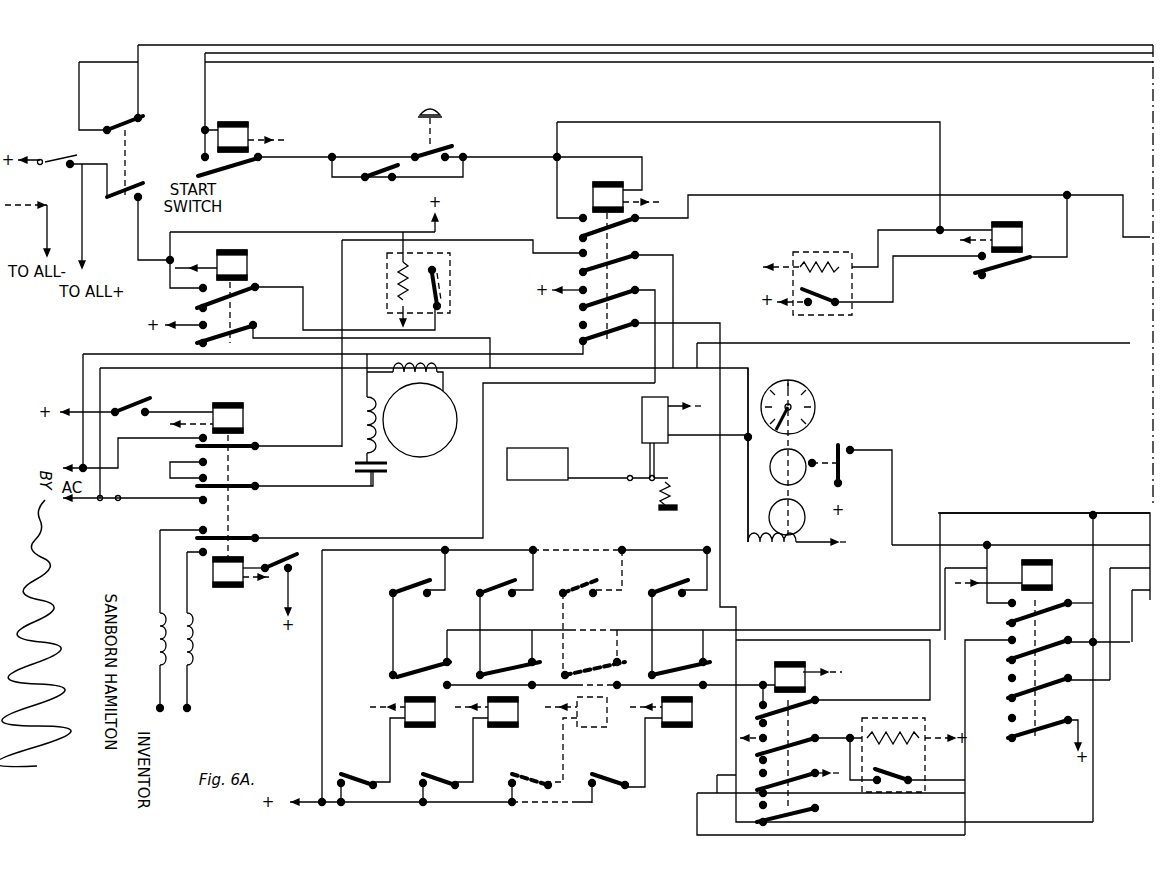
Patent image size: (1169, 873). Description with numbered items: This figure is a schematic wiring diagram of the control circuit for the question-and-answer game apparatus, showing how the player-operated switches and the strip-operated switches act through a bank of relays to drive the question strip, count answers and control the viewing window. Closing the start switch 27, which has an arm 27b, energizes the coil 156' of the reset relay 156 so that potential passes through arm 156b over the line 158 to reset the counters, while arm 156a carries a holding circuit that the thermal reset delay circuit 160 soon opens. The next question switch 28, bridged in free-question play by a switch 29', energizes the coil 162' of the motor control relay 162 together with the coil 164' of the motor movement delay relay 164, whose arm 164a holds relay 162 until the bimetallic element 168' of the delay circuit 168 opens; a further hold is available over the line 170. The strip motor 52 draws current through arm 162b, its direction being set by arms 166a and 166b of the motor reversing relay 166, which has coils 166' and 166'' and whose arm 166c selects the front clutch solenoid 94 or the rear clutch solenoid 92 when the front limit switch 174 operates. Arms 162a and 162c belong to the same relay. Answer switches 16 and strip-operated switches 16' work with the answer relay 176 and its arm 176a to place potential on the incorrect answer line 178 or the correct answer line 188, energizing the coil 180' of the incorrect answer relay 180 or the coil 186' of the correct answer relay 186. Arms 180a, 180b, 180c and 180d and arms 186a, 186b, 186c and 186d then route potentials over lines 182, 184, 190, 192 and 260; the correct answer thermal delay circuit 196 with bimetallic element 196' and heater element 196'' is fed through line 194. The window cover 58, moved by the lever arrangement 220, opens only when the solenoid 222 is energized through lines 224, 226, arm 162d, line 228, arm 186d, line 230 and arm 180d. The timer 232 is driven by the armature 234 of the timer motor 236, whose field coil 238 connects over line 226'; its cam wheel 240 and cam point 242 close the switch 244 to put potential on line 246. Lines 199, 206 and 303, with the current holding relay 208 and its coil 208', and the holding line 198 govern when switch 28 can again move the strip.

The start switch 27 is at (118, 124).
The start switch arm 27b is at (122, 193).
The next question switch 28 is at (452, 78).
The free question switch 29' is at (373, 190).
The supply line 303 is at (138, 98).
The positive potential line 206 is at (205, 98).
The holding circuit line 199 is at (1100, 62).
The current holding relay 208 is at (242, 173).
The current holding relay coil 208' is at (258, 123).
The reset relay 156 is at (173, 314).
The reset relay coil 156' is at (237, 265).
The reset relay arm 156a is at (235, 295).
The reset relay arm 156b is at (215, 348).
The reset line 158 is at (270, 340).
The thermal reset delay circuit 160 is at (450, 268).
The motor control relay 162 is at (550, 273).
The motor control relay coil 162' is at (622, 186).
The motor control relay arm 162a is at (625, 225).
The motor control relay arm 162b is at (620, 265).
The motor control relay arm 162c is at (615, 300).
The motor control relay arm 162d is at (580, 329).
The window cover circuit line 228 is at (700, 331).
The motor delay opening delay circuit 168 is at (853, 263).
The bimetallic element 168' is at (892, 296).
The motor movement delay relay 164 is at (928, 278).
The motor movement delay relay coil 164' is at (991, 226).
The motor delay relay arm 164a is at (1010, 270).
The holding line 170 is at (1103, 300).
The answer relay 176 is at (123, 408).
The answer relay arm 176a is at (408, 675).
The motor reversing relay 166 is at (255, 496).
The motor reversing relay coil 166' is at (235, 420).
The motor reversing relay coil 166'' is at (239, 586).
The motor reversing relay arm 166a is at (195, 455).
The motor reversing relay arm 166b is at (197, 490).
The motor reversing relay arm 166c is at (240, 535).
The front limit switch 174 is at (290, 552).
The front clutch solenoid 94 is at (146, 621).
The rear clutch solenoid 92 is at (198, 640).
The strip motor 52 is at (420, 457).
The window cover 58 is at (530, 495).
The pivoted lever arrangement 220 is at (585, 480).
The window cover solenoid 222 is at (640, 442).
The solenoid circuit line 224 is at (672, 445).
The solenoid circuit line 226 is at (769, 449).
The timer motor line 226' is at (710, 468).
The timer 232 is at (812, 393).
The cam wheel 240 is at (825, 445).
The cam point 242 is at (805, 472).
The timer switch 244 is at (843, 468).
The timer line 246 is at (896, 483).
The motor armature 234 is at (805, 522).
The field coil 238 is at (775, 555).
The timer motor 236 is at (792, 560).
The holding circuit line 198 is at (1100, 512).
The positive potential line 260 is at (1108, 548).
The negative potential line 192 is at (1140, 573).
The stepping solenoid line 182 is at (1135, 622).
The incorrect answer relay 180 is at (1076, 671).
The incorrect answer relay coil 180' is at (1019, 564).
The incorrect answer relay arm 180a is at (1040, 618).
The incorrect answer relay arm 180b is at (1030, 655).
The incorrect answer relay arm 180c is at (1030, 693).
The incorrect answer relay arm 180d is at (1025, 745).
The negative potential line 184 is at (966, 690).
The delay circuit line 194 is at (975, 790).
The correct answer thermal delay circuit 196 is at (911, 738).
The bimetallic element 196' is at (901, 761).
The heater element 196'' is at (885, 712).
The correct answer relay 186 is at (821, 743).
The correct answer relay coil 186' is at (808, 666).
The correct answer relay arm 186a is at (780, 716).
The correct answer relay arm 186b is at (785, 748).
The correct answer relay arm 186c is at (780, 788).
The correct answer relay arm 186d is at (795, 822).
The window cover circuit line 230 is at (920, 810).
The interconnecting line 190 is at (715, 775).
The correct answer line 188 is at (490, 708).
The incorrect answer line 178 is at (475, 630).
The answer switches 16 is at (539, 618).
The answer track switches 16' is at (483, 684).